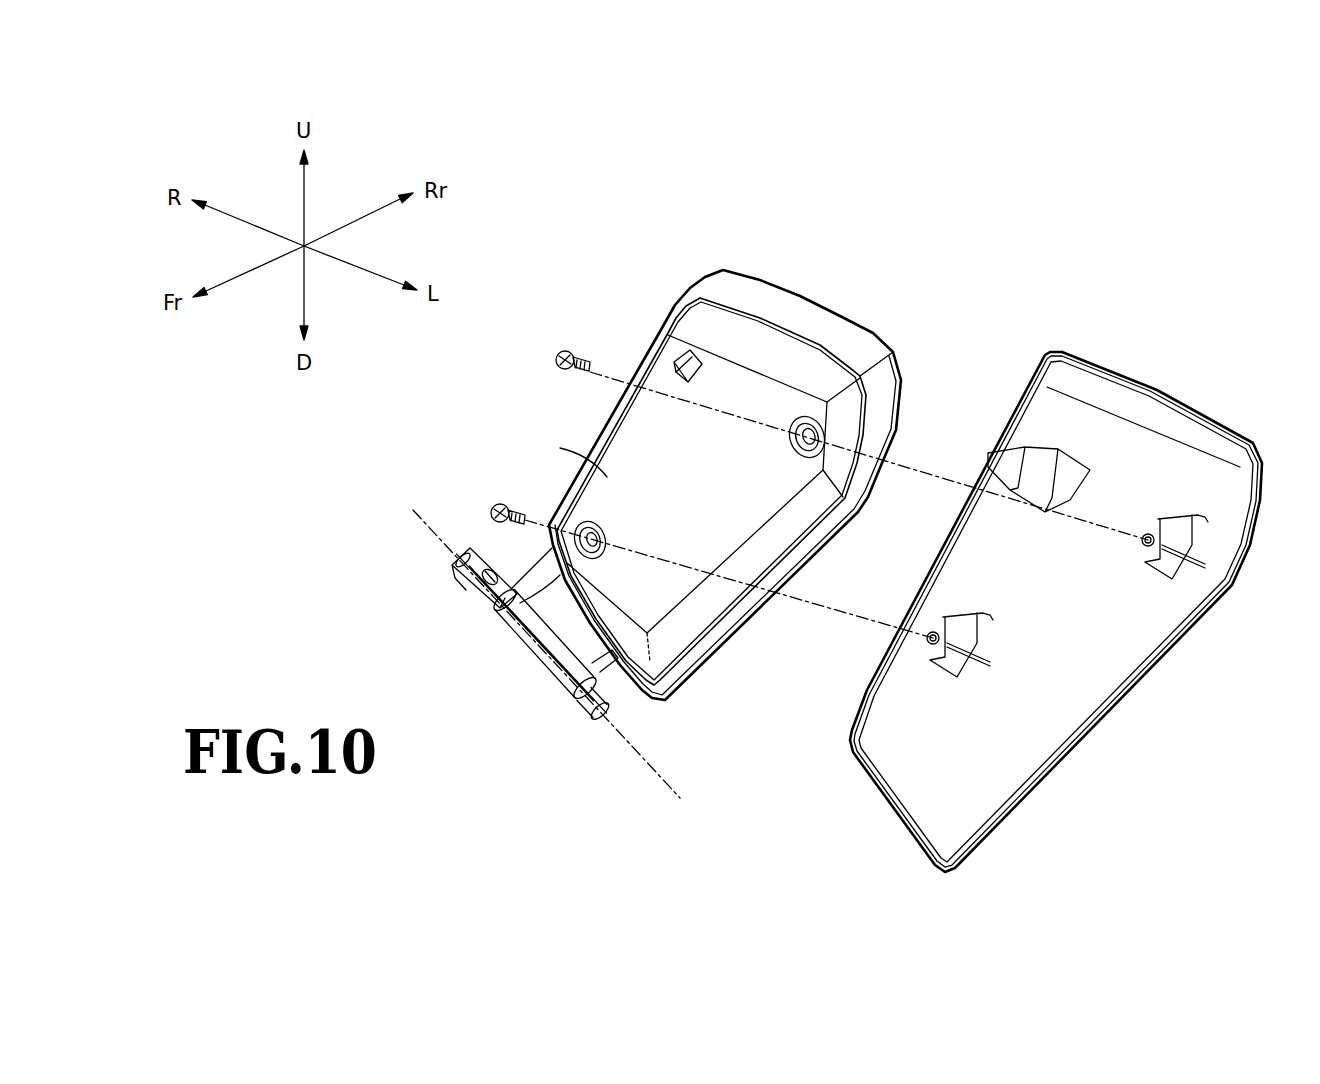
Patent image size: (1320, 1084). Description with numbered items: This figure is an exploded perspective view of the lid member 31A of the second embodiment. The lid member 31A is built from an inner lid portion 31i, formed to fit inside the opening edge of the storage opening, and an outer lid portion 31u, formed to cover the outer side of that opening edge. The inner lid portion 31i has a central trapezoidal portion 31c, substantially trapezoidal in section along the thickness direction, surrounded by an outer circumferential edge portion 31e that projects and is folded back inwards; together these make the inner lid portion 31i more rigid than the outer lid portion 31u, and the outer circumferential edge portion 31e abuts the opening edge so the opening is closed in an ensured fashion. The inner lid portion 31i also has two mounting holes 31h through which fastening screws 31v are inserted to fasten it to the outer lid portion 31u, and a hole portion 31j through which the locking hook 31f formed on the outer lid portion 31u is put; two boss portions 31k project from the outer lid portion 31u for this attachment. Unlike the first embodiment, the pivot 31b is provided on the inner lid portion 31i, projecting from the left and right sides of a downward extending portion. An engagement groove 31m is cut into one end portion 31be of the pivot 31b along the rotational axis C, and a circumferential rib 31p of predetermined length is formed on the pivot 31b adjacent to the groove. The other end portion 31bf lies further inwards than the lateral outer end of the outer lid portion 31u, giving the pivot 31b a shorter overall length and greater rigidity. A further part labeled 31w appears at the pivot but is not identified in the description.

The lid member 31A is at (1012, 297).
The outer circumferential edge portion 31e is at (840, 330).
The outer lid portion 31u is at (1138, 370).
The fastening screws 31v is at (568, 352).
The inner lid portion 31i is at (622, 455).
The central trapezoidal portion 31c is at (560, 455).
The hole portion 31j is at (682, 386).
The mounting holes 31h is at (798, 450).
The locking hook 31f is at (1010, 450).
The boss portions 31k is at (1147, 525).
The circumferential rib 31p is at (488, 570).
The engagement groove 31m is at (455, 575).
The one end portion 31be is at (458, 560).
The pivot 31b is at (482, 612).
The hinge sleeve 31w is at (540, 590).
The other end portion 31bf is at (593, 712).
The rotational axis C is at (660, 780).